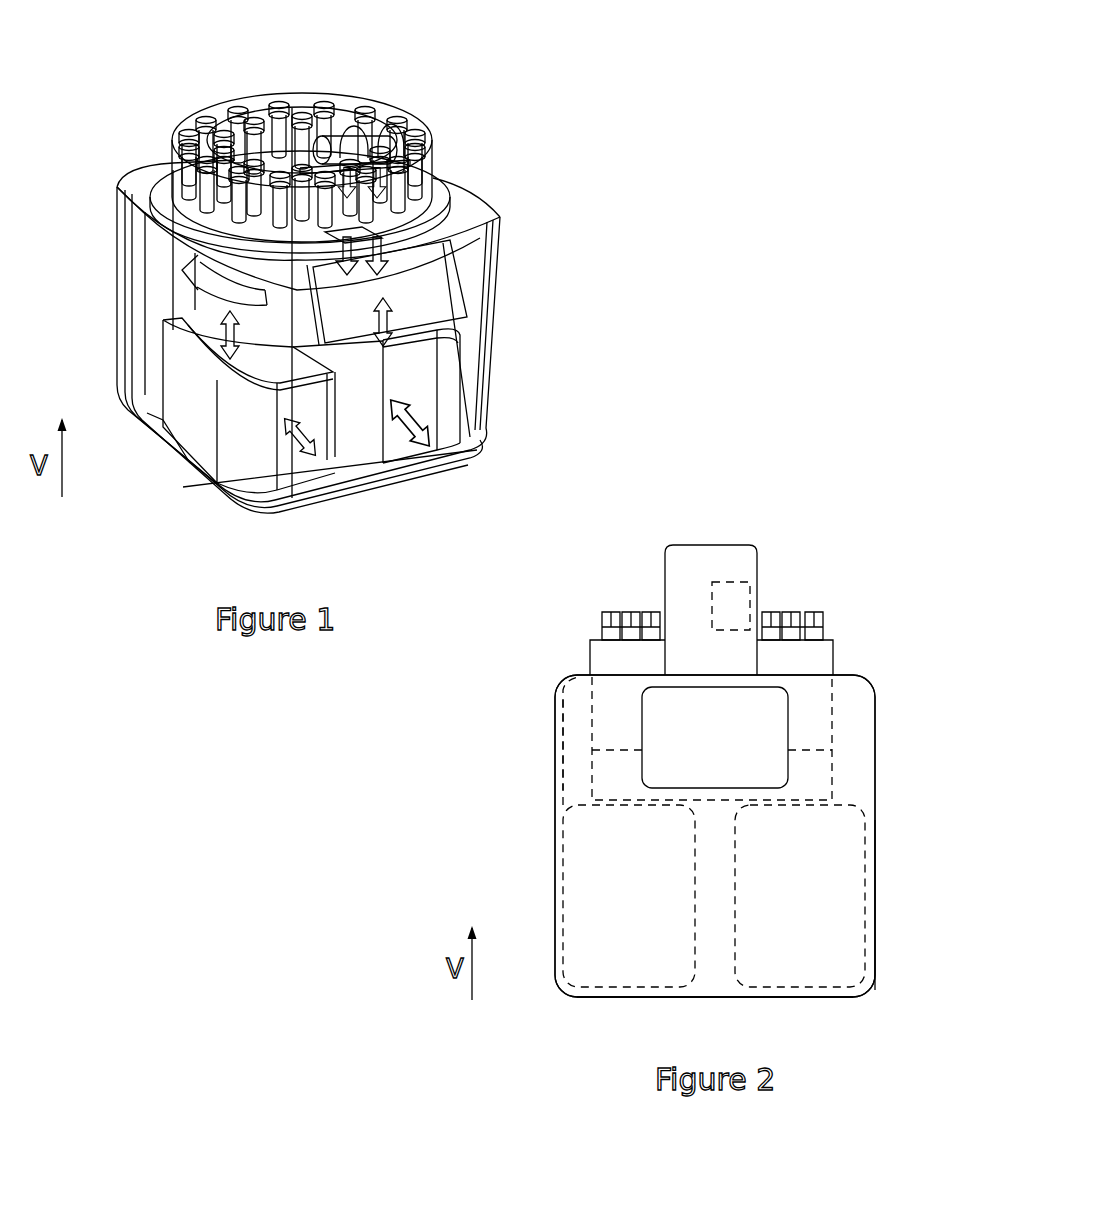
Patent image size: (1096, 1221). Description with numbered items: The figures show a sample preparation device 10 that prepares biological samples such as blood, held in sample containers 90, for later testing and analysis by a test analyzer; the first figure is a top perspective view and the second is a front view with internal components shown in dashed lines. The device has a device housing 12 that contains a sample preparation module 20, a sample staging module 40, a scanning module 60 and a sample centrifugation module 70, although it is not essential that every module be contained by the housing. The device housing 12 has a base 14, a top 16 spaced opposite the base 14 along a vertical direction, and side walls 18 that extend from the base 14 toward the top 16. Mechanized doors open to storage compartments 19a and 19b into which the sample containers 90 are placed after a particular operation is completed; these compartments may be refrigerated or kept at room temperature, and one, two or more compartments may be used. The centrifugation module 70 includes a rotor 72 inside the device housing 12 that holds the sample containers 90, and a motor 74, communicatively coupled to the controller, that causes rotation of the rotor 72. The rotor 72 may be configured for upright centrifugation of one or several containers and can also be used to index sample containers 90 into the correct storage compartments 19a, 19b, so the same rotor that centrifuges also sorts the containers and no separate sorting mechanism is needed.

In FIG. 1, the sample preparation device 10 is at (245, 86).
In FIG. 2, the sample preparation device 10 is at (742, 490).
In FIG. 1, the device housing 12 is at (127, 277).
In FIG. 2, the device housing 12 is at (555, 812).
In FIG. 1, the base 14 is at (163, 462).
In FIG. 2, the base 14 is at (580, 1006).
In FIG. 1, the top 16 is at (115, 170).
In FIG. 2, the top 16 is at (540, 692).
In FIG. 1, the side walls 18 is at (458, 347).
In FIG. 2, the side walls 18 is at (871, 858).
In FIG. 1, the storage compartment 19a is at (253, 470).
In FIG. 2, the storage compartment 19a is at (612, 897).
In FIG. 1, the storage compartment 19b is at (353, 425).
In FIG. 2, the storage compartment 19b is at (805, 916).
In FIG. 1, the sample preparation module 20 is at (430, 152).
In FIG. 2, the sample preparation module 20 is at (676, 556).
In FIG. 1, the sample staging module 40 is at (170, 118).
In FIG. 2, the sample staging module 40 is at (582, 648).
In FIG. 2, the scanning module 60 is at (731, 603).
In FIG. 2, the sample centrifugation module 70 is at (803, 726).
In FIG. 2, the rotor 72 is at (810, 766).
In FIG. 2, the motor 74 is at (575, 765).
In FIG. 2, the sample containers 90 is at (820, 633).